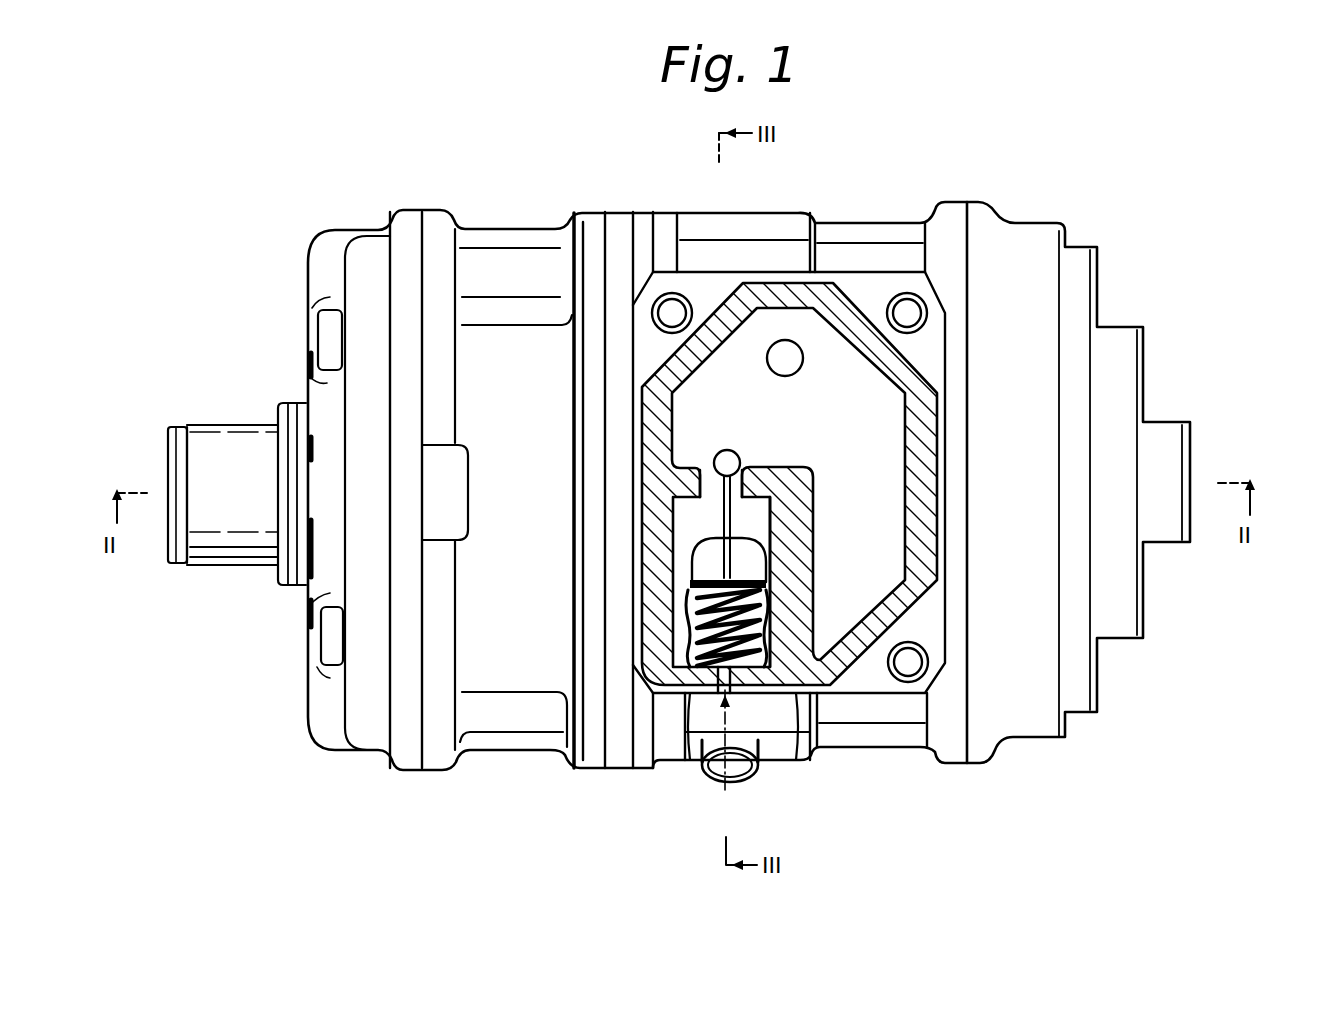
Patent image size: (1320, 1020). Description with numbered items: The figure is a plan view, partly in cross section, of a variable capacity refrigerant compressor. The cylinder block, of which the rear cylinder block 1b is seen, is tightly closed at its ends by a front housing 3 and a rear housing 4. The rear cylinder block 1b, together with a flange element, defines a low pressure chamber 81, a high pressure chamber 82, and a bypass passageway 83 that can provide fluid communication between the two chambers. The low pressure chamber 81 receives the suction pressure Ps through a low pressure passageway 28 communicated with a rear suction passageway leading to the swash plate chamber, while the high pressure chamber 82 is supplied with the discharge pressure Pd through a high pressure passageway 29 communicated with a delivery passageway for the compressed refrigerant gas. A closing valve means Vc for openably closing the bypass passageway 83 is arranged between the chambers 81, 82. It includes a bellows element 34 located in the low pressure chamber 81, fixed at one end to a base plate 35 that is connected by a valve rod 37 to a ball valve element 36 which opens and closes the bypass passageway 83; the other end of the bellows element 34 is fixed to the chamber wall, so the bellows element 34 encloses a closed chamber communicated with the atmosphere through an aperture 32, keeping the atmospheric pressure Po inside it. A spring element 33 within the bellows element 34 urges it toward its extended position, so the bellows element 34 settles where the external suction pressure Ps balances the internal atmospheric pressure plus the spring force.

The front housing 3 is at (408, 222).
The rear cylinder block 1b is at (643, 218).
The rear housing 4 is at (1010, 230).
The high pressure passageway 29 is at (801, 362).
The ball valve element 36 is at (727, 450).
The high pressure chamber 82 is at (856, 441).
The bypass passageway 83 is at (696, 470).
The low pressure chamber 81 is at (718, 536).
The valve rod 37 is at (772, 545).
The low pressure passageway 28 is at (756, 560).
The base plate 35 is at (766, 585).
The spring element 33 is at (766, 626).
The aperture 32 is at (690, 745).
The bellows element 34 is at (795, 725).
The discharge pressure Pd is at (753, 423).
The suction pressure Ps is at (751, 523).
The atmospheric pressure Po is at (730, 787).
The closing valve means Vc is at (712, 540).